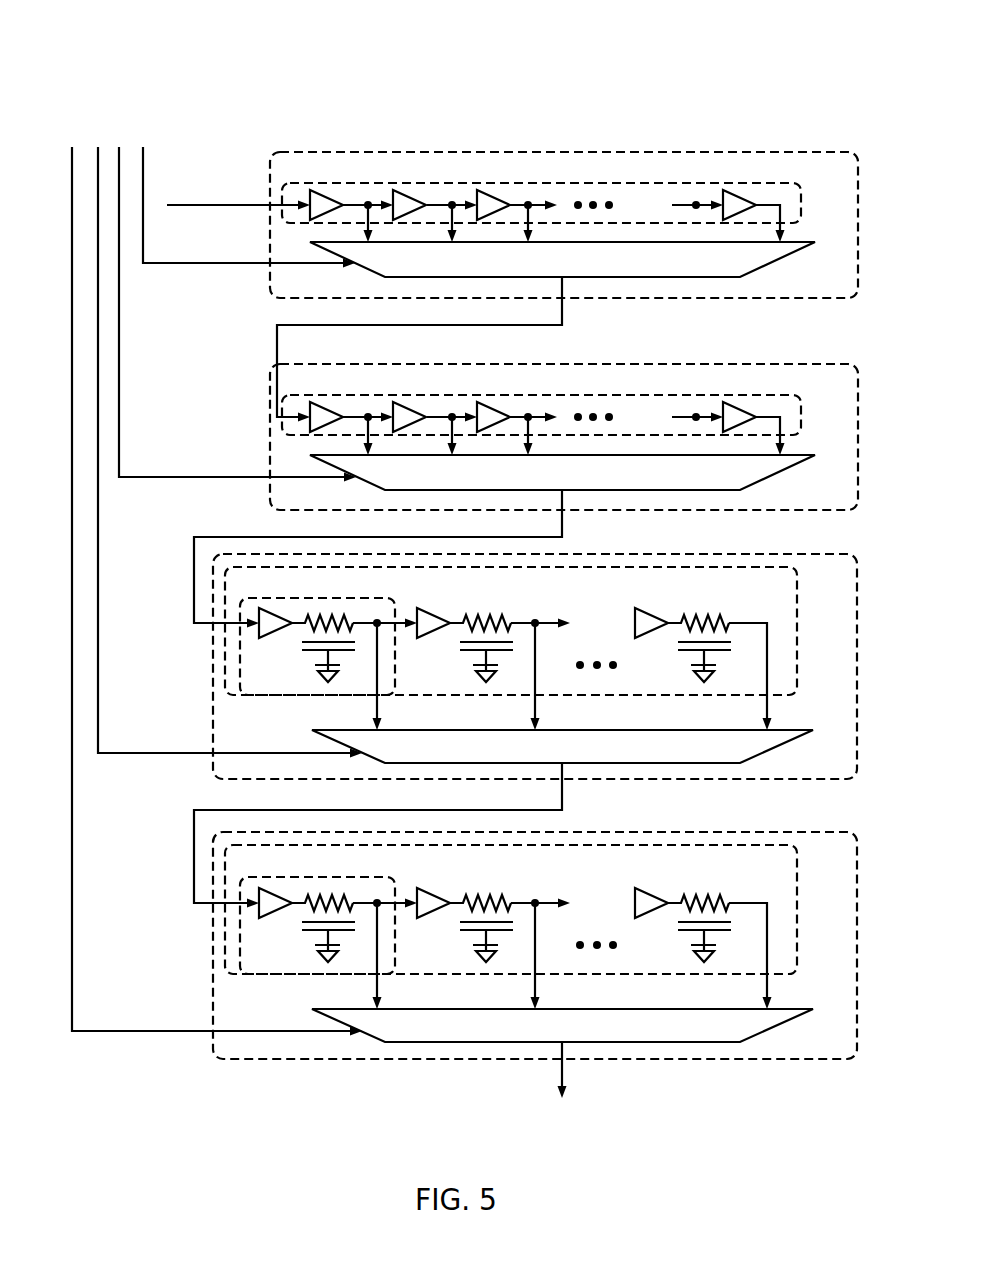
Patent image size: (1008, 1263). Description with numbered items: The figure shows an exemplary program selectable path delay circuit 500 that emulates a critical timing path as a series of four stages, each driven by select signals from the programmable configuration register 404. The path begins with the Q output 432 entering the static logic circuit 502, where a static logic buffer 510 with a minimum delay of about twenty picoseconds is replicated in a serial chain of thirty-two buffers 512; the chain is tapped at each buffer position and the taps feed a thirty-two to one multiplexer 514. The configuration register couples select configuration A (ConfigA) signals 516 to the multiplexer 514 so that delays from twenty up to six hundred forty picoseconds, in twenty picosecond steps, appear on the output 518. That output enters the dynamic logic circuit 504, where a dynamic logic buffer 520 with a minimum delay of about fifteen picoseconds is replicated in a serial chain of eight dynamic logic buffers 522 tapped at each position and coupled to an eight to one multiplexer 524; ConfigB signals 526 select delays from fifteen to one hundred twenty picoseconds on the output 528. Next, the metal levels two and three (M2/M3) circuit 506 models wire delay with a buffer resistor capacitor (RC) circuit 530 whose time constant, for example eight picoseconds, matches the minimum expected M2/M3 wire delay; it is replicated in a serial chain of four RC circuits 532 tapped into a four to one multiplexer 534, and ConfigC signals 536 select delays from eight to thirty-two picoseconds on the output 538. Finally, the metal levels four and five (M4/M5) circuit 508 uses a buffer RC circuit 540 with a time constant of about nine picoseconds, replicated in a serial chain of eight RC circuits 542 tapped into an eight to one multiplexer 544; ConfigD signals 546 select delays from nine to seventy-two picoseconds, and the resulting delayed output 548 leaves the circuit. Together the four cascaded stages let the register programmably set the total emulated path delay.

The program selectable path delay circuit 500 is at (806, 54).
The programmable configuration register 404 is at (143, 101).
The Q output 432 is at (241, 203).
The static logic circuit 502 is at (767, 152).
The static logic buffer 510 is at (337, 190).
The serial chain of 32 buffers 512 is at (575, 183).
The 32 to 1 multiplexer 514 is at (748, 263).
The select configuration A (ConfigA) signals 516 is at (177, 263).
The output 518 is at (562, 318).
The dynamic logic circuit 504 is at (767, 364).
The dynamic logic buffer 520 is at (337, 402).
The serial chain of eight dynamic logic buffers 522 is at (575, 395).
The 8 to 1 multiplexer 524 is at (748, 476).
The select configuration B (ConfigB) signals 526 is at (177, 477).
The output 528 is at (562, 530).
The metal levels 2 and 3 (M2/M3) circuit 506 is at (775, 553).
The buffer resistor capacitor (RC) circuit 530 is at (312, 598).
The serial chain of four RC circuits 532 is at (565, 567).
The 4 to 1 multiplexer 534 is at (772, 745).
The select configuration C (ConfigC) signals 536 is at (125, 755).
The output 538 is at (562, 805).
The metal levels 4 and 5 (M4/M5) circuit 508 is at (775, 832).
The buffer resistor capacitor (RC) circuit 540 is at (312, 877).
The serial chain of eight RC circuits 542 is at (565, 845).
The 8 to 1 multiplexer 544 is at (772, 1025).
The select configuration D (ConfigD) signals 546 is at (117, 1033).
The output 548 is at (562, 1075).